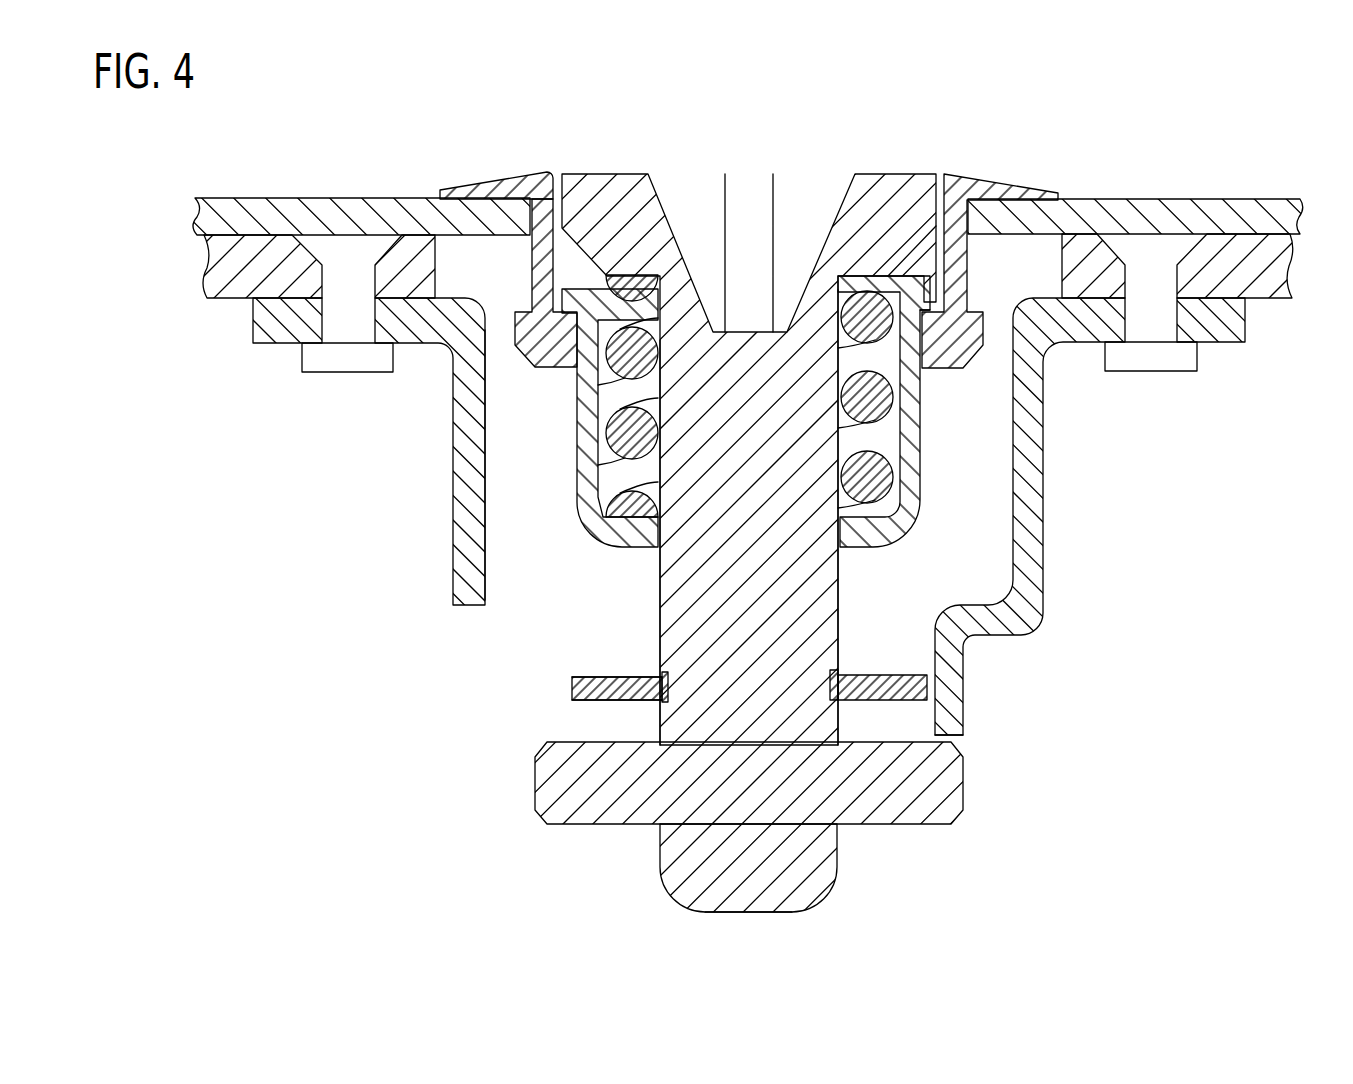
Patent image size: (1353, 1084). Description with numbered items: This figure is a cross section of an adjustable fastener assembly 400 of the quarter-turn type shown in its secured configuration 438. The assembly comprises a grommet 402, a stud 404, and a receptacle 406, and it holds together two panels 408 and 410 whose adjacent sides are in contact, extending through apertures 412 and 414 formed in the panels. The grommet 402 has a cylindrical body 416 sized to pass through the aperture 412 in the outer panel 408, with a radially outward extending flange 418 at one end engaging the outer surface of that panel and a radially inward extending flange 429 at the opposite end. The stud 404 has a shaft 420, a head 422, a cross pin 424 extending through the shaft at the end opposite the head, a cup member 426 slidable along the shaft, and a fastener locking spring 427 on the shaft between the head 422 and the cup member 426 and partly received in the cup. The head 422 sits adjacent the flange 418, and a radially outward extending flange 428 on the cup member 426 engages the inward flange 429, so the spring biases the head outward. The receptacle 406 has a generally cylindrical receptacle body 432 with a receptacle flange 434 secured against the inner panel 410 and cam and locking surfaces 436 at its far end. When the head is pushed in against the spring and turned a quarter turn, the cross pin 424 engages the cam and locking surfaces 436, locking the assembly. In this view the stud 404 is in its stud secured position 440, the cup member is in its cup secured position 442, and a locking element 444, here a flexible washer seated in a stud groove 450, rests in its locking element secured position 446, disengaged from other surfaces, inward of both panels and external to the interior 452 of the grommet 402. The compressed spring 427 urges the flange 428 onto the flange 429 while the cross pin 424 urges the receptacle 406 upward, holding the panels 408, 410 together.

The adjustable fastener assembly 400 is at (1196, 97).
The grommet 402 is at (995, 188).
The stud 404 is at (760, 912).
The receptacle 406 is at (463, 556).
The panel 408 is at (288, 210).
The panel 410 is at (225, 297).
The aperture 412 is at (928, 247).
The aperture 414 is at (1048, 253).
The cylindrical body 416 is at (543, 260).
The radially outward extending flange 418 is at (493, 190).
The shaft 420 is at (660, 873).
The head 422 is at (707, 185).
The cross pin 424 is at (535, 775).
The cup member 426 is at (588, 487).
The fastener locking spring 427 is at (868, 477).
The radially outward extending flange 428 is at (923, 300).
The radially inward extending flange 429 is at (923, 303).
The receptacle body 432 is at (463, 485).
The receptacle flange 434 is at (1213, 320).
The cam and locking surfaces 436 is at (853, 700).
The secured configuration 438 is at (289, 518).
The stud secured position 440 is at (660, 626).
The cup secured position 442 is at (578, 432).
The locking element 444 is at (590, 700).
The locking element secured position 446 is at (572, 683).
The stud groove 450 is at (662, 680).
The interior 452 is at (928, 265).